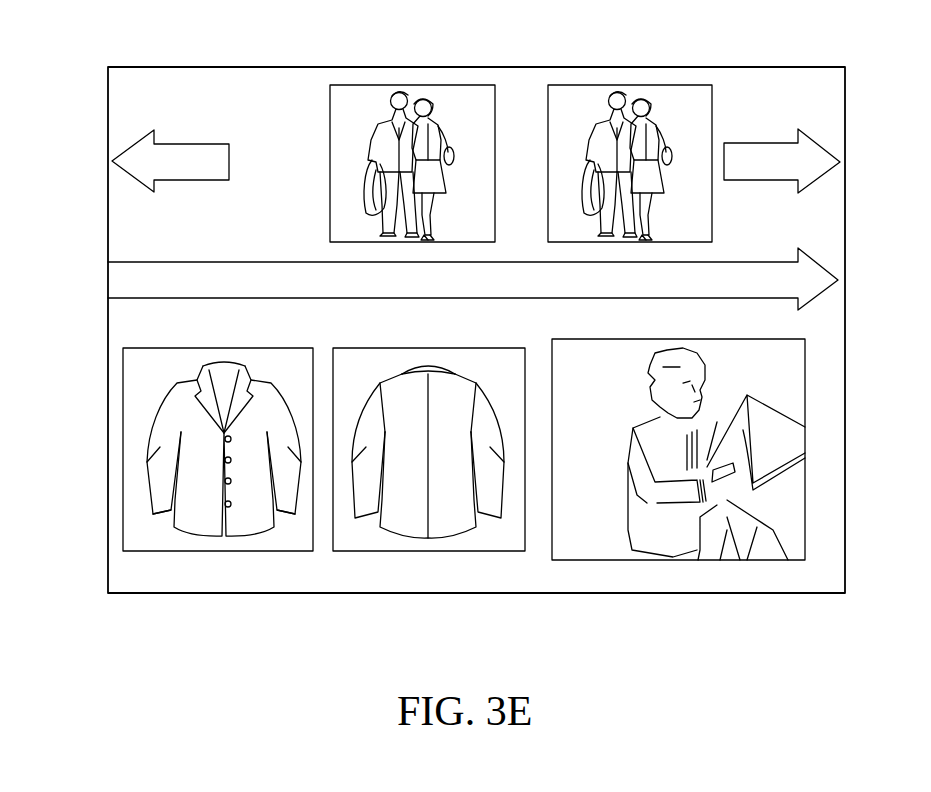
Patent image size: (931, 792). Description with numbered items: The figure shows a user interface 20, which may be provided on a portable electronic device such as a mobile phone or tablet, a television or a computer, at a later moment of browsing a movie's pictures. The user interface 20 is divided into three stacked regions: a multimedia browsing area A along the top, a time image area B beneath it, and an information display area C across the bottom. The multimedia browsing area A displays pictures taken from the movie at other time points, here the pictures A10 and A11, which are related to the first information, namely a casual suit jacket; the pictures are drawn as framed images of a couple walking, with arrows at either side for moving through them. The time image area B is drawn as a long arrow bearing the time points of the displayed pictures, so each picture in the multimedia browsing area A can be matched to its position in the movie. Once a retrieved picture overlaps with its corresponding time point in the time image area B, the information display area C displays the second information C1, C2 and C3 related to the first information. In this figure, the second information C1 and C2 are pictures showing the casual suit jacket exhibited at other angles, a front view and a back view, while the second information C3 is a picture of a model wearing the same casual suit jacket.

The user interface 20 is at (740, 67).
The multimedia browsing area A is at (132, 198).
The time image area B is at (122, 283).
The information display area C is at (122, 431).
The video frame image A10 is at (368, 85).
The picture A11 is at (583, 85).
The second information C1 is at (158, 551).
The second information C2 is at (385, 551).
The second information C3 is at (622, 560).